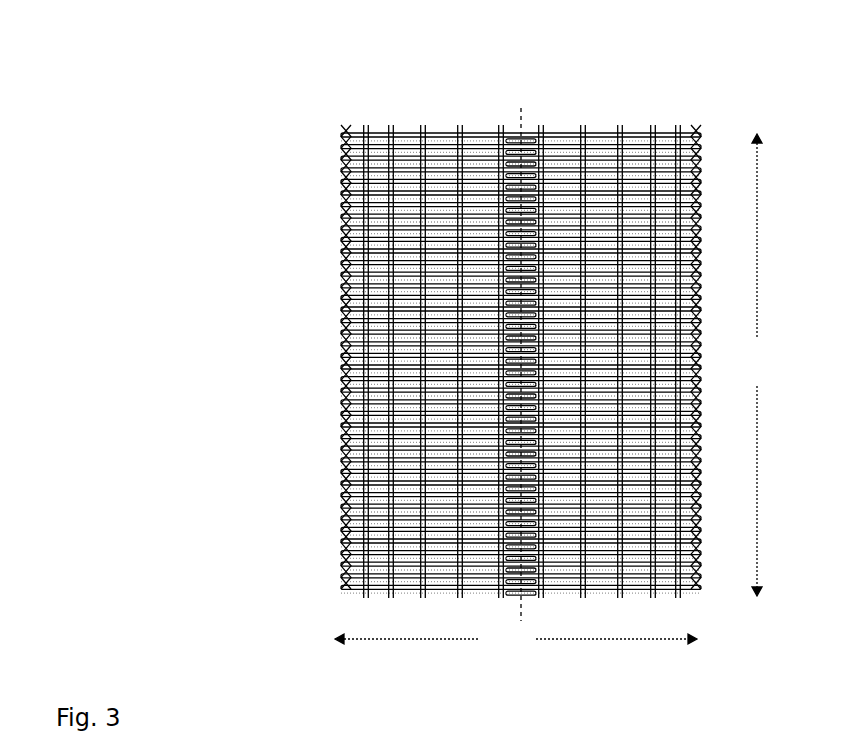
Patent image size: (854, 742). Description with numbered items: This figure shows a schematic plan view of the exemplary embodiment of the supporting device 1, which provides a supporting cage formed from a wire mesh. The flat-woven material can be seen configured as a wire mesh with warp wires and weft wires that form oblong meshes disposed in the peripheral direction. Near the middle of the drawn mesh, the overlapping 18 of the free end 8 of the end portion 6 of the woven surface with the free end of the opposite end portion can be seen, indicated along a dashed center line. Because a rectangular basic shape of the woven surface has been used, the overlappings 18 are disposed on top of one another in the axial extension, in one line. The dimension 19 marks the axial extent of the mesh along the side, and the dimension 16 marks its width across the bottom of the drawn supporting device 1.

The supporting device 1 is at (180, 68).
The end portion 6 is at (486, 96).
The free end 8 is at (543, 91).
The overlapping 18 is at (517, 94).
The height of mesh 19 is at (755, 365).
The width of mesh 16 is at (516, 640).